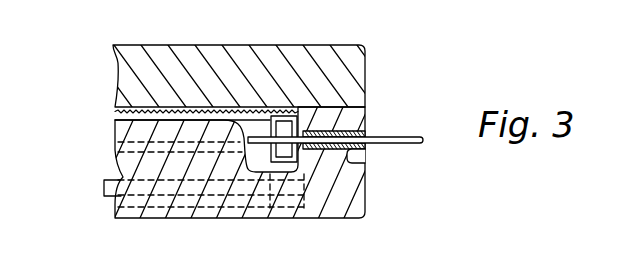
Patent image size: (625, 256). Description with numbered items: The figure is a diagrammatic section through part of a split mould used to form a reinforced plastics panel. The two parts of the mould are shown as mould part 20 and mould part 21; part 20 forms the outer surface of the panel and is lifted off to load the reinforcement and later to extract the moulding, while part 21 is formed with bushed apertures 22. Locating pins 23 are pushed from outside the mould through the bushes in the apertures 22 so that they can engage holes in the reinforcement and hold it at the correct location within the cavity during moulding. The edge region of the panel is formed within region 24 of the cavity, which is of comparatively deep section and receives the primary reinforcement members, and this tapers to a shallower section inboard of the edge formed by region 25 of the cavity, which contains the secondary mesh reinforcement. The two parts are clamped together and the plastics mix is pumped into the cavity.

The mould part 20 is at (322, 58).
The mould part 21 is at (358, 198).
The bushed apertures 22 is at (365, 158).
The pins 23 is at (400, 136).
The region of the mould cavity 24 is at (260, 163).
The region of the mould cavity 25 is at (102, 118).